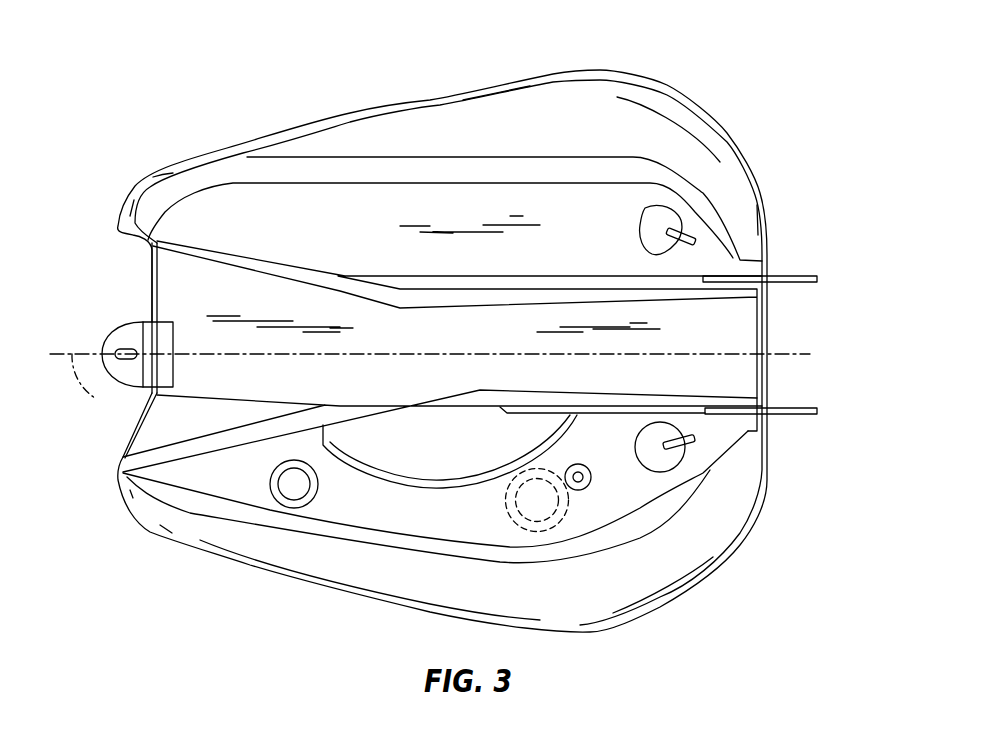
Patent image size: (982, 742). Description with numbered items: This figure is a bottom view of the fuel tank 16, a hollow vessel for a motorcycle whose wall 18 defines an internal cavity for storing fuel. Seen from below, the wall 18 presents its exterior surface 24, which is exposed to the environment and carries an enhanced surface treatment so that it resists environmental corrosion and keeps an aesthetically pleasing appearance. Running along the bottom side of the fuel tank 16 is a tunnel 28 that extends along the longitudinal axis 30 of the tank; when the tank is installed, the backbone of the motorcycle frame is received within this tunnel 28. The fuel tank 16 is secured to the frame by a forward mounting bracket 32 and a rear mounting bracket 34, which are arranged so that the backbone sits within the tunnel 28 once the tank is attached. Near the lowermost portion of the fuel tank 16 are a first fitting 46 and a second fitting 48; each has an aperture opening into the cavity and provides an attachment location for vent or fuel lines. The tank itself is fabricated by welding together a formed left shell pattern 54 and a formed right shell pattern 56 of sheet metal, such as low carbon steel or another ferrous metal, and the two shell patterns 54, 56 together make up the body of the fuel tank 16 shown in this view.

The fuel tank 16 is at (762, 135).
The wall 18 is at (763, 195).
The exterior surface 24 is at (549, 140).
The tunnel 28 is at (722, 323).
The longitudinal axis 30 is at (89, 388).
The forward mounting bracket 32 is at (793, 277).
The rear mounting bracket 34 is at (122, 334).
The first fitting 46 is at (687, 443).
The second fitting 48 is at (640, 248).
The left shell pattern 54 is at (594, 597).
The right shell pattern 56 is at (634, 125).